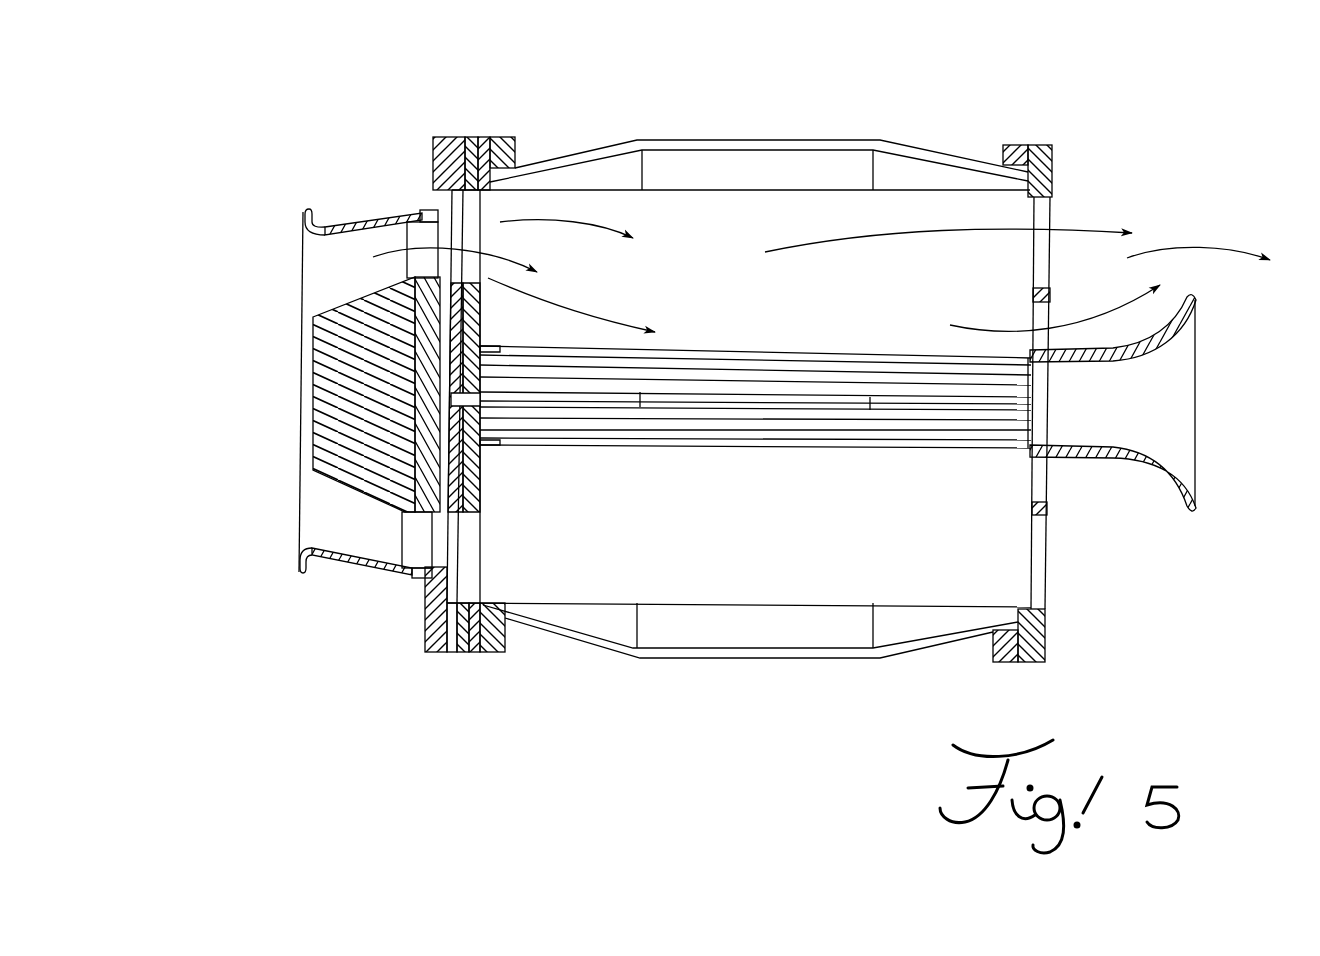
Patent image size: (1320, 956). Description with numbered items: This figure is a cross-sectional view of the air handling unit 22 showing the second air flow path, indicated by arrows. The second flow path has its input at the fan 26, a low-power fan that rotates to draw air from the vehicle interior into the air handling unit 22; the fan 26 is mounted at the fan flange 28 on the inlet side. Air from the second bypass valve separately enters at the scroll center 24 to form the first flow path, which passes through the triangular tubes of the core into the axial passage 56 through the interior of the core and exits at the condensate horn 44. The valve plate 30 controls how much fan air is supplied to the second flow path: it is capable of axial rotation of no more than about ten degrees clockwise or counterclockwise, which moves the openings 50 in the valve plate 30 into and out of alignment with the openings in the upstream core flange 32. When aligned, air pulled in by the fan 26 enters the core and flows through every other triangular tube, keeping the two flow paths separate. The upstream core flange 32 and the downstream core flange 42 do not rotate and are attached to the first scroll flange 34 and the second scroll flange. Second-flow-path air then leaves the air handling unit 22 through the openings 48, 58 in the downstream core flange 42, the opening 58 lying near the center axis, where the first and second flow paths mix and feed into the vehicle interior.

The air handling unit 22 is at (900, 105).
The scroll center 24 is at (762, 140).
The fan 26 is at (331, 566).
The fan flange 28 is at (413, 605).
The valve plate 30 is at (450, 300).
The upstream core flange 32 is at (476, 131).
The first scroll flange 34 is at (509, 131).
The downstream core flange 42 is at (1046, 140).
The condensate horn 44 is at (1197, 297).
The openings in the downstream core flange 48 is at (1036, 549).
The openings in the valve plate 50 is at (432, 653).
The axial passage 56 is at (918, 410).
The opening near the center axis of the downstream core flange 58 is at (1039, 476).